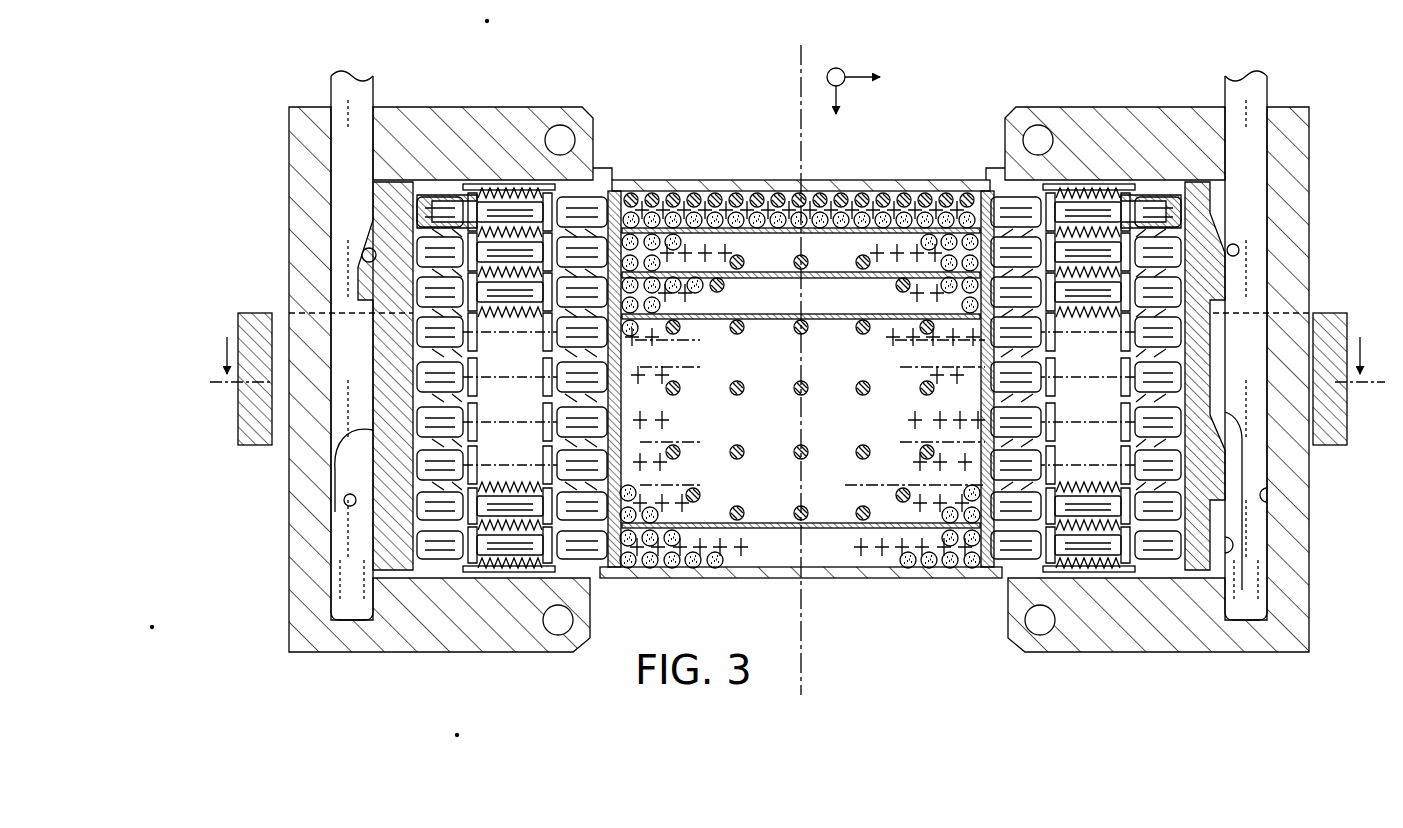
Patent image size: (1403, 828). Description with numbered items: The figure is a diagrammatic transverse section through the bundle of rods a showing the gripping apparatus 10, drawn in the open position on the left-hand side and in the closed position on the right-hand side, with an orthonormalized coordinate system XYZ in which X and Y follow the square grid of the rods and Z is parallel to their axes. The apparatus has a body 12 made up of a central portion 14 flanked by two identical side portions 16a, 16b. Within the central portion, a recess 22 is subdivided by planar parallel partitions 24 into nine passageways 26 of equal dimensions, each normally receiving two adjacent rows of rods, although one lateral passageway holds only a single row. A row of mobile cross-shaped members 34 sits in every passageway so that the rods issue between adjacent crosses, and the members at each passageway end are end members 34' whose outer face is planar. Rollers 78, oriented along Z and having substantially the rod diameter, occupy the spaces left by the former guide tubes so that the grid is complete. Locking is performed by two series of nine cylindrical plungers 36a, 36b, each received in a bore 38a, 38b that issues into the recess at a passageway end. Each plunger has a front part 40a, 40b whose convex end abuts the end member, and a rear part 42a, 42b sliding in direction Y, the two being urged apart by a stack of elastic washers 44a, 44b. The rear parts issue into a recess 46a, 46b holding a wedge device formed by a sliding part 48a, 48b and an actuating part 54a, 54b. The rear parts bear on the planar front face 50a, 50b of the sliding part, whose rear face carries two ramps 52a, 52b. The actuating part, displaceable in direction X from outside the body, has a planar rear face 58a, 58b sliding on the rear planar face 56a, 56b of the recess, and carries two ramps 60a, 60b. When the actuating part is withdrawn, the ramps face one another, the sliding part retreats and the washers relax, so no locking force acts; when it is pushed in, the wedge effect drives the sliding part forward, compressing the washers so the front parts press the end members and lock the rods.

The gripping apparatus 10 is at (740, 145).
The body 12 is at (1313, 148).
The central portion 14 is at (783, 573).
The side portion 16a is at (1105, 122).
The side portion 16b is at (478, 128).
The recess 22 is at (840, 560).
The partitions 24 is at (829, 240).
The passageways 26 is at (776, 262).
The mobile cross-shaped members 34 is at (805, 378).
The end members 34' is at (801, 382).
The plungers 36a is at (1033, 505).
The plungers 36b is at (572, 275).
The bore 38a is at (1010, 572).
The bore 38b is at (606, 505).
The front part 40a is at (1033, 295).
The front part 40b is at (580, 205).
The rear part 42a is at (1165, 195).
The rear part 42b is at (440, 196).
The elastic washers 44a is at (1075, 190).
The elastic washers 44b is at (522, 186).
The recess 46a is at (1272, 652).
The recess 46b is at (408, 585).
The wedge part 48a is at (1193, 552).
The wedge part 48b is at (370, 552).
The planar front face 50a is at (1147, 540).
The planar front face 50b is at (432, 552).
The ramps 52a is at (1228, 235).
The ramps 52b is at (358, 225).
The actuating part 54a is at (1240, 98).
The actuating part 54b is at (350, 105).
The rear planar face 56a is at (1272, 97).
The rear planar face 56b is at (333, 95).
The planar rear face 58a is at (1233, 487).
The planar rear face 58b is at (365, 305).
The ramps 60a is at (1233, 318).
The ramps 60b is at (362, 253).
The rollers 78 is at (846, 200).
The rods a is at (948, 243).